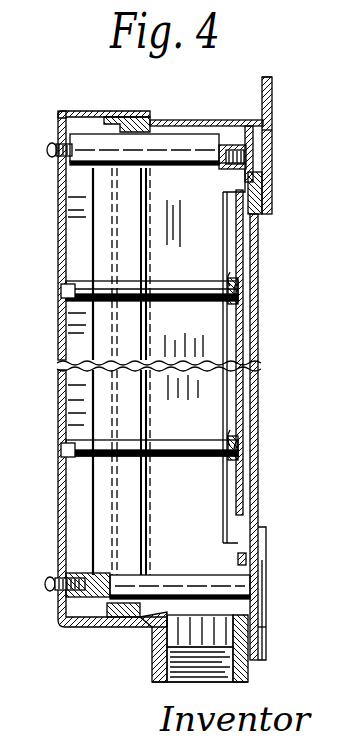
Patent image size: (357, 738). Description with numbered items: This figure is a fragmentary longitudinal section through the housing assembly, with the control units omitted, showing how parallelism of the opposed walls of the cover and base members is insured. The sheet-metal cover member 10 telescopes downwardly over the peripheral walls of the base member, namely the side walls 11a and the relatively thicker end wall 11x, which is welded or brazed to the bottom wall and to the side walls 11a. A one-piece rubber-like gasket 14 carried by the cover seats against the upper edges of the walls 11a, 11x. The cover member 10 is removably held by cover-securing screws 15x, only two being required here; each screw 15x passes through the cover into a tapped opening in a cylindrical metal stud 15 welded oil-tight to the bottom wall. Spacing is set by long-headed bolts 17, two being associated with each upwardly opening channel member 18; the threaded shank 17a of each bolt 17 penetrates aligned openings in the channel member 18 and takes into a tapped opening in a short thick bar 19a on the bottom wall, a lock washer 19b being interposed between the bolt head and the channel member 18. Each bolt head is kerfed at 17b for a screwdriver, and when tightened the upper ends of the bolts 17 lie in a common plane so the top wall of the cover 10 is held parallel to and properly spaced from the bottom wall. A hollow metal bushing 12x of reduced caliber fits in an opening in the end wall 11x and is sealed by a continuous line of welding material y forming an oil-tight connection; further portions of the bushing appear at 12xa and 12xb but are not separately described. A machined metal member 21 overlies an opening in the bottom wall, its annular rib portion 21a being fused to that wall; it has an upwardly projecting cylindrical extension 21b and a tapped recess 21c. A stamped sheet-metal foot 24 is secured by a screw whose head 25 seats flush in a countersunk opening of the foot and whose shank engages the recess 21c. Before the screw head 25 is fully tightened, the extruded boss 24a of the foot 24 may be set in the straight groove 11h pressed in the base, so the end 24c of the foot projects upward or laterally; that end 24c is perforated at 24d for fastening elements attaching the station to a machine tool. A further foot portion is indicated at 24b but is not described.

The cover member 10 is at (58, 343).
The gasket strip 14 is at (120, 116).
The side walls 11a is at (175, 120).
The machined metal member 21 is at (228, 139).
The annular rib portion 21a is at (246, 128).
The cylindrical extension 21b is at (224, 167).
The tapped recess 21c is at (227, 176).
The screw head 25 is at (247, 156).
The groove 11h is at (261, 183).
The foot 24 is at (272, 111).
The boss 24a is at (262, 204).
The frame portion 24b is at (272, 135).
The end of foot member 24c is at (263, 80).
The perforation 24d is at (272, 85).
The stud 15 is at (94, 146).
The securing screw 15x is at (48, 151).
The long-headed bolt 17 is at (190, 286).
The threaded shank 17a is at (250, 300).
The kerf 17b is at (66, 286).
The channel member 18 is at (236, 326).
The bar 19a is at (248, 292).
The lock washer 19b is at (234, 284).
The end wall 11x is at (156, 623).
The bushing 12x is at (158, 667).
The nut collar 12xa is at (182, 607).
The nut bottom 12xb is at (240, 676).
The welding connection y is at (264, 630).